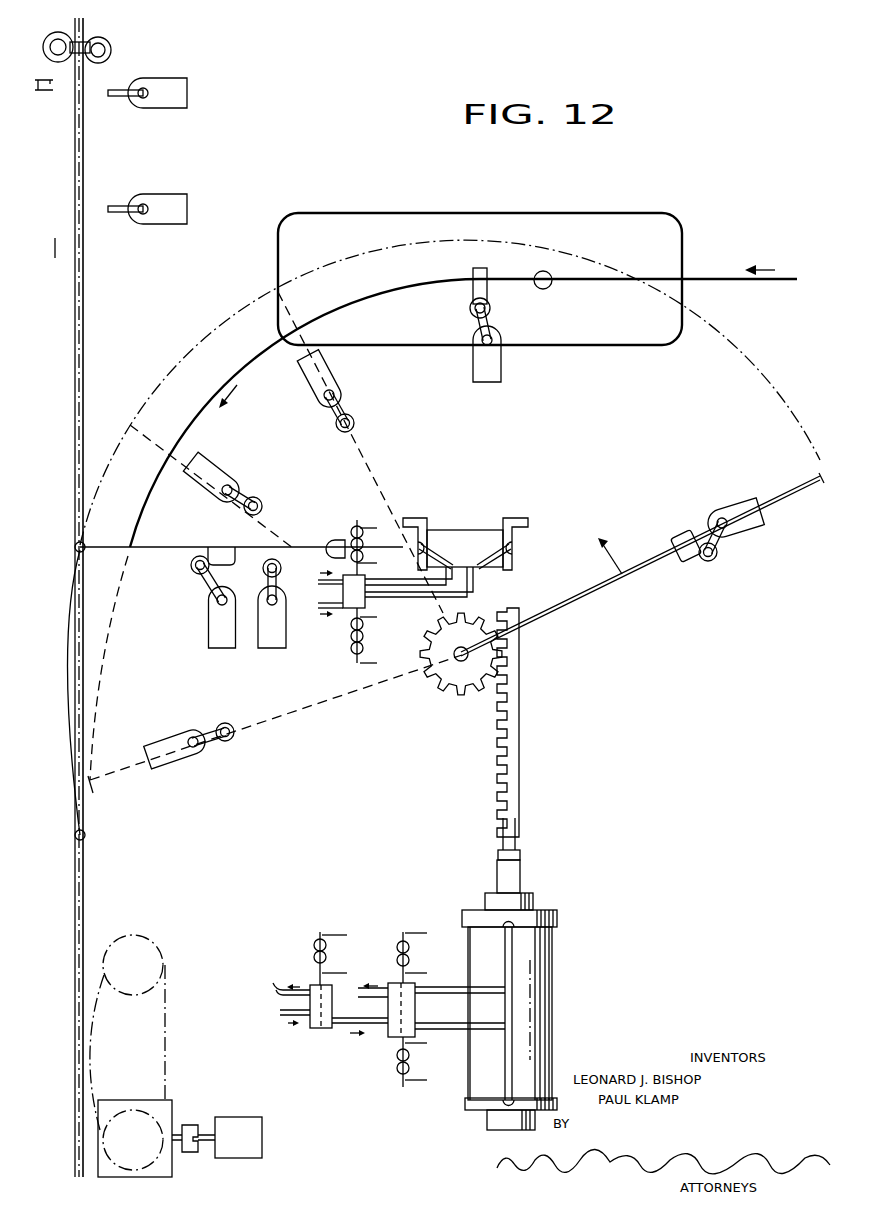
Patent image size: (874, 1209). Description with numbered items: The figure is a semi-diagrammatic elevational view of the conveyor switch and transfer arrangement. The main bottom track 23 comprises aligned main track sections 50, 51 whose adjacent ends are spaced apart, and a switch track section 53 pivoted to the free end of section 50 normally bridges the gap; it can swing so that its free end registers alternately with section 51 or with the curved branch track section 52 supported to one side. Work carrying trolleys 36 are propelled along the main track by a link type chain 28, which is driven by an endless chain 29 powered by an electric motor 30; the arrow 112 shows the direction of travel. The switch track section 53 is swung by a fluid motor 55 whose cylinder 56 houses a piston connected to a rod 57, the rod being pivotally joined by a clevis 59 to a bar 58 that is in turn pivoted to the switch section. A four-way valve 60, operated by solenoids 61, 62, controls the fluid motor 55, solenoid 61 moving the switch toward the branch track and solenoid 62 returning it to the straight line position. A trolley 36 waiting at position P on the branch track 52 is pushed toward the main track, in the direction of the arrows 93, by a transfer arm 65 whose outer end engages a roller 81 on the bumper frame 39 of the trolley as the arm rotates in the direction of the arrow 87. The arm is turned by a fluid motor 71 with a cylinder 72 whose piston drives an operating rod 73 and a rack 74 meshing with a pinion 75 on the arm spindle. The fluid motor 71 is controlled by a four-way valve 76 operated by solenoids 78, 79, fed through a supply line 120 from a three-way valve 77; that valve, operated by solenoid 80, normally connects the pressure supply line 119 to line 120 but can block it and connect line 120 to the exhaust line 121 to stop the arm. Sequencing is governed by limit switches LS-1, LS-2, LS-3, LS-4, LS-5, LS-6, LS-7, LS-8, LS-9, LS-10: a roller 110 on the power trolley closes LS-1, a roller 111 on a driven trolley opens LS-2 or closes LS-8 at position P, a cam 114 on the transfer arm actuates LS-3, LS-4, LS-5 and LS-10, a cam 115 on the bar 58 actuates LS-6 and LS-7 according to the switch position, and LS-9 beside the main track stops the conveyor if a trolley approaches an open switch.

The roller 110 is at (50, 33).
The roller 111 is at (112, 52).
The limit switch LS-1 is at (46, 75).
The limit switch LS-2 is at (145, 99).
The limit switch LS-9 is at (125, 214).
The arrow 112 is at (55, 236).
The link type chain 28 is at (84, 331).
The bottom track 23 is at (79, 400).
The main track section 51 is at (75, 437).
The curved branch track section 52 is at (193, 410).
The arrows 93 is at (232, 397).
The limit switch LS-4 is at (238, 473).
The cam 115 is at (223, 553).
The bar 58 is at (290, 545).
The clevis 59 is at (340, 540).
The solenoid 61 is at (386, 546).
The solenoid 62 is at (375, 660).
The four-way valve 60 is at (368, 602).
The rod 57 is at (390, 544).
The cylinder 56 is at (444, 534).
The fluid motor 55 is at (480, 528).
The limit switch LS-3 is at (342, 390).
The position P is at (478, 266).
The roller 81 is at (550, 287).
The limit switch LS-8 is at (502, 372).
The bumper frame 39 is at (646, 346).
The work carrying trolley 36 is at (684, 336).
The arrow 87 is at (612, 557).
The limit switch LS-10 is at (740, 530).
The cam 114 is at (689, 558).
The transfer arm 65 is at (585, 602).
The limit switch LS-6 is at (222, 650).
The limit switch LS-7 is at (275, 645).
The pinion 75 is at (470, 672).
The switch track section 53 is at (78, 697).
The limit switch LS-5 is at (198, 752).
The rack 74 is at (516, 812).
The operating rod 73 is at (516, 888).
The cylinder 72 is at (542, 978).
The fluid motor 71 is at (556, 1018).
The solenoid 80 is at (314, 953).
The solenoid 78 is at (397, 943).
The solenoid 79 is at (408, 1074).
The exhaust line 121 is at (270, 982).
The pressure supply line 119 is at (279, 1018).
The three-way valve 77 is at (312, 1030).
The supply line 120 is at (348, 1026).
The four-way valve 76 is at (395, 1038).
The main track section 50 is at (74, 940).
The endless chain 29 is at (168, 1035).
The motor 30 is at (240, 1126).